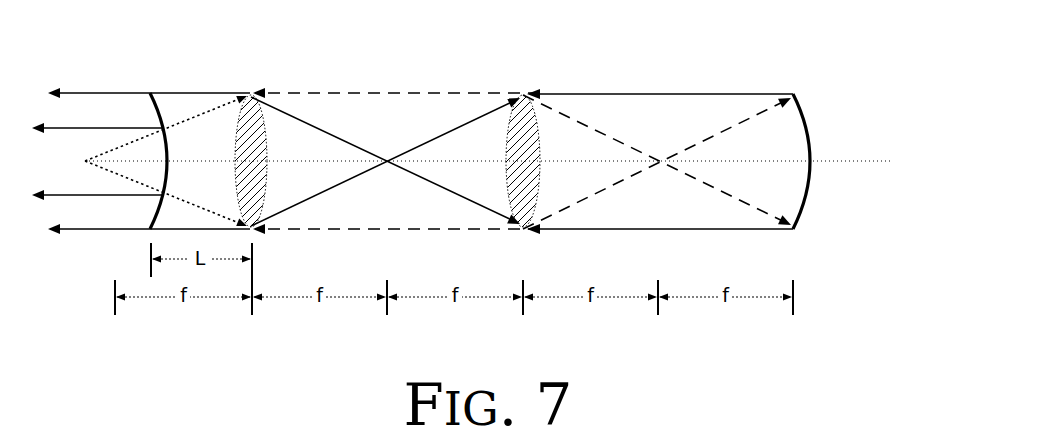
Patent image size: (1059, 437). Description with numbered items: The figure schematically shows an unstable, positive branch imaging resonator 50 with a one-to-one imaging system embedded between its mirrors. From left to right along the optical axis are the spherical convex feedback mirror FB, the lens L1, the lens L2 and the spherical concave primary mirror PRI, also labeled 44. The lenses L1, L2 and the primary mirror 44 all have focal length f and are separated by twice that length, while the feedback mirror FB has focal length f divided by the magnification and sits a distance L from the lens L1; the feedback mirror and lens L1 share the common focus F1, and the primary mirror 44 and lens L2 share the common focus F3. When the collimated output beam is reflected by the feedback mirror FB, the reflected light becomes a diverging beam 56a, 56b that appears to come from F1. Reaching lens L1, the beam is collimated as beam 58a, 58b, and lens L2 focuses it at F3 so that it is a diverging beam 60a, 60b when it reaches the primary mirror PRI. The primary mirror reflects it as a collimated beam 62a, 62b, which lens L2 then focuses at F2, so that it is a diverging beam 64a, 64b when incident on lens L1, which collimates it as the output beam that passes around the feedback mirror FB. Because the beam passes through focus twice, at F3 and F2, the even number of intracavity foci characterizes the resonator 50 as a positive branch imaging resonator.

The positive branch imaging resonator 50 is at (674, 46).
The primary mirror 44 is at (840, 161).
The diverging beam 56a is at (172, 127).
The diverging beam 56b is at (220, 212).
The collimated beam 58a is at (380, 92).
The collimated beam 58b is at (362, 227).
The diverging beam 60a is at (721, 192).
The diverging beam 60b is at (725, 130).
The collimated beam 62a is at (632, 228).
The collimated beam 62b is at (652, 93).
The diverging beam 64a is at (314, 126).
The diverging beam 64b is at (428, 142).
The lens L1 is at (251, 159).
The lens L2 is at (523, 159).
The feedback mirror FB is at (146, 161).
The primary mirror PRI is at (846, 143).
The common focus F1 is at (72, 142).
The intracavity focus F2 is at (382, 128).
The common focus F3 is at (657, 143).